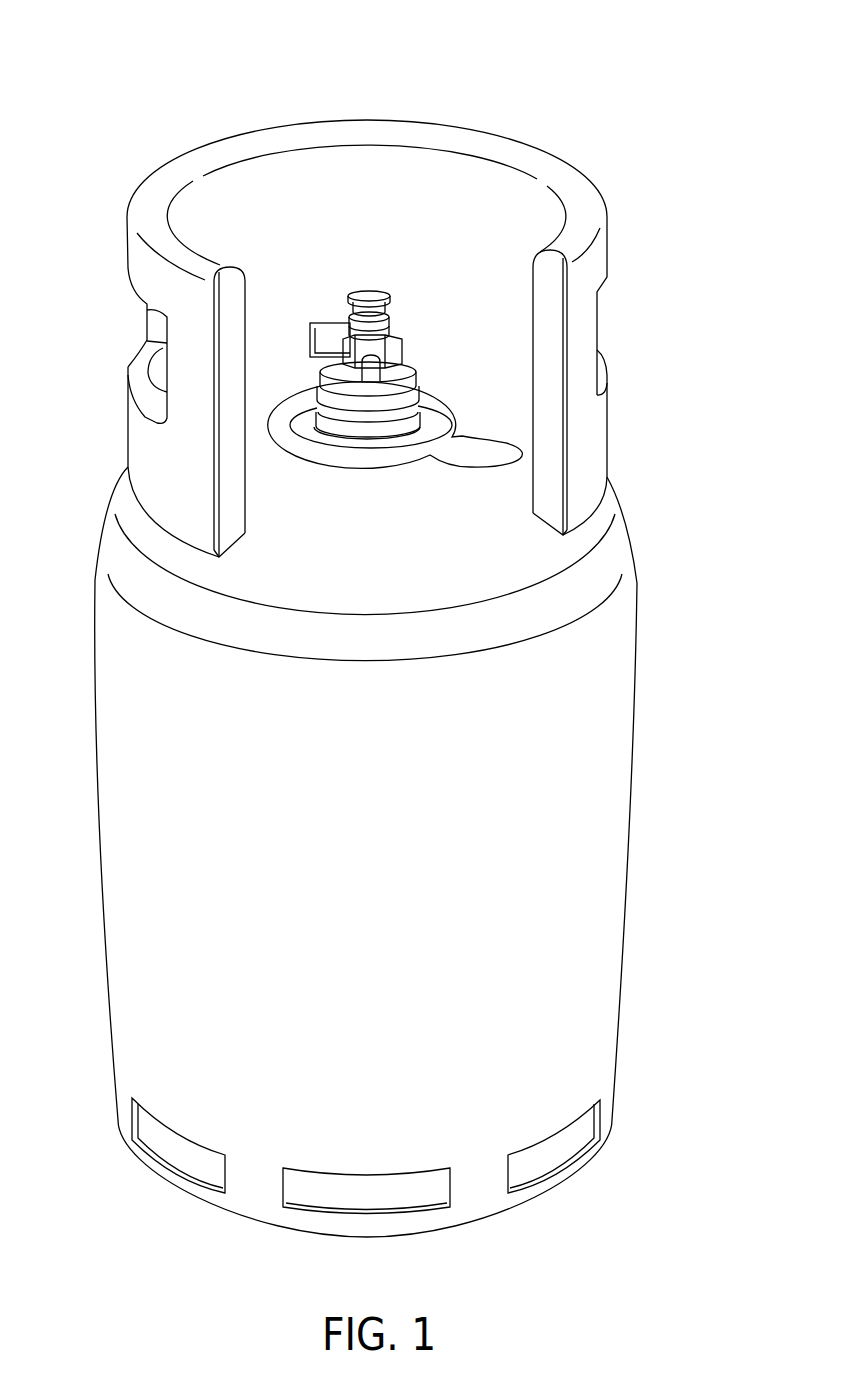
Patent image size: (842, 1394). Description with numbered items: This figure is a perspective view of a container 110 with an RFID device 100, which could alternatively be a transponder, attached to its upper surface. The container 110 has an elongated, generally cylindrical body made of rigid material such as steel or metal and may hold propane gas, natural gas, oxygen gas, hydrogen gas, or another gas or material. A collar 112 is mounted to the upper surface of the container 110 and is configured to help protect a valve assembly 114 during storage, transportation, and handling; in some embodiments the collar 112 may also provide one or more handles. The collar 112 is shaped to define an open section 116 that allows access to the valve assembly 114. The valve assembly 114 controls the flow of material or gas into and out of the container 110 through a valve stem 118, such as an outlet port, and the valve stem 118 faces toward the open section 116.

The RFID device 100 is at (483, 452).
The container 110 is at (476, 113).
The collar 112 is at (297, 137).
The valve assembly 114 is at (302, 399).
The open section 116 is at (331, 555).
The valve stem 118 is at (369, 378).